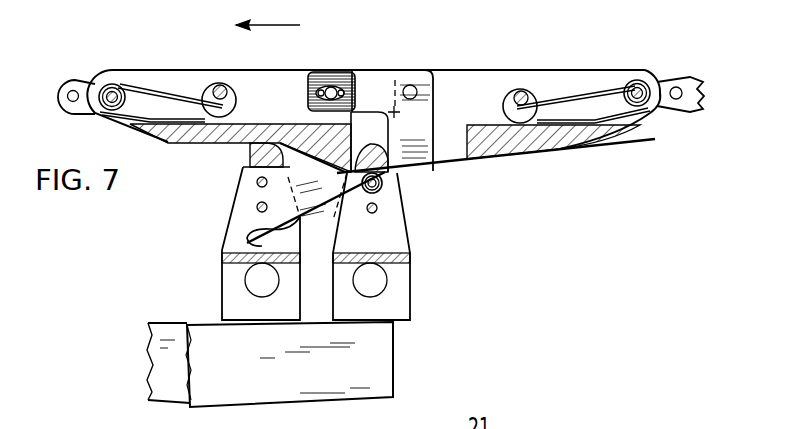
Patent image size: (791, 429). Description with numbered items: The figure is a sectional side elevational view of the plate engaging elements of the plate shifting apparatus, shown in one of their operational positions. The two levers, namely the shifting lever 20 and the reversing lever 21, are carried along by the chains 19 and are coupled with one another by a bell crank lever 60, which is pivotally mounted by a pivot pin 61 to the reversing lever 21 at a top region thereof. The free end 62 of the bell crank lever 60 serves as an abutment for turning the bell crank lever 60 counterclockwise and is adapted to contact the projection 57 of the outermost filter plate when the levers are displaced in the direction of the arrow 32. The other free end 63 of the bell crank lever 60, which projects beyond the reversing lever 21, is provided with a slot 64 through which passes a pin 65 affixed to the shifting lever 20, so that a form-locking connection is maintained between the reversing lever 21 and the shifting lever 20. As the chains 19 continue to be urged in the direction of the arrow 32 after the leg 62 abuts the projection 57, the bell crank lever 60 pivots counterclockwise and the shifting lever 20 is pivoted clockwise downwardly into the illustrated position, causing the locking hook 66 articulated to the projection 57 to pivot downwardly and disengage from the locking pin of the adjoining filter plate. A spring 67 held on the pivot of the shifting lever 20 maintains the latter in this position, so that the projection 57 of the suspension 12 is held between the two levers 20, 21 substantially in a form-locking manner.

The suspension 12 is at (390, 358).
The chains 19 is at (73, 78).
The shifting lever 20 is at (178, 82).
The reversing lever 21 is at (490, 78).
The arrow 32 is at (264, 28).
The projection 57 is at (403, 222).
The bell crank lever 60 is at (367, 80).
The pivot pin 61 is at (412, 85).
The free end 62 is at (412, 162).
The free end 63 is at (318, 77).
The slot 64 is at (337, 90).
The pin 65 is at (313, 90).
The locking hook 66 is at (315, 205).
The spring 67 is at (125, 88).